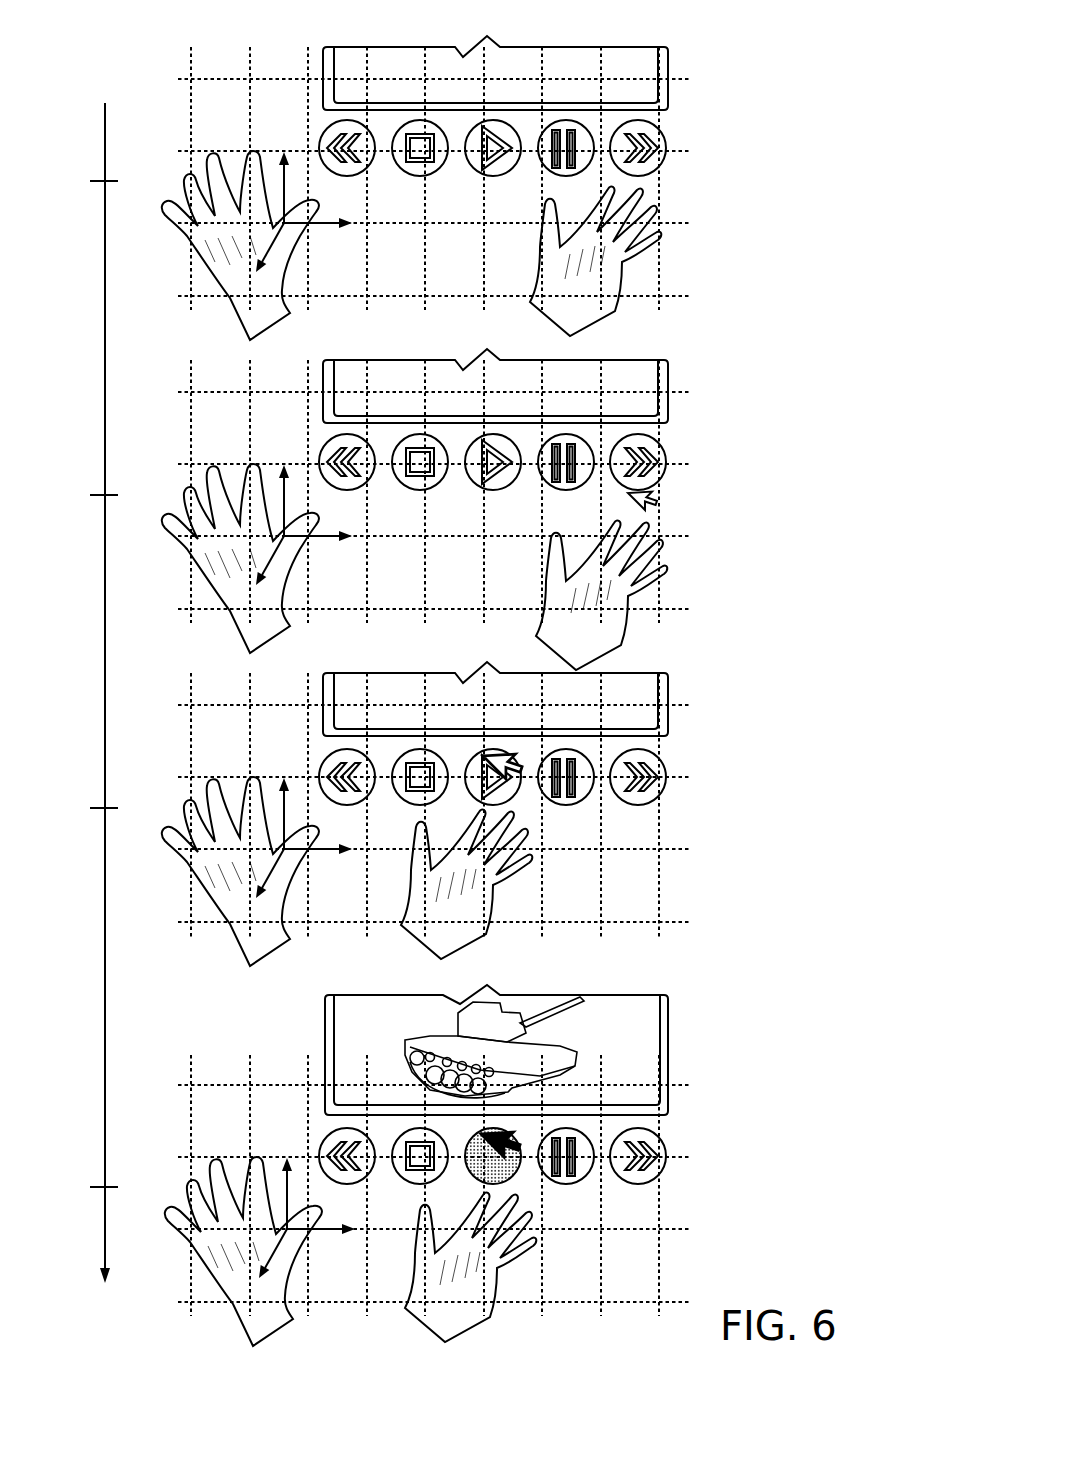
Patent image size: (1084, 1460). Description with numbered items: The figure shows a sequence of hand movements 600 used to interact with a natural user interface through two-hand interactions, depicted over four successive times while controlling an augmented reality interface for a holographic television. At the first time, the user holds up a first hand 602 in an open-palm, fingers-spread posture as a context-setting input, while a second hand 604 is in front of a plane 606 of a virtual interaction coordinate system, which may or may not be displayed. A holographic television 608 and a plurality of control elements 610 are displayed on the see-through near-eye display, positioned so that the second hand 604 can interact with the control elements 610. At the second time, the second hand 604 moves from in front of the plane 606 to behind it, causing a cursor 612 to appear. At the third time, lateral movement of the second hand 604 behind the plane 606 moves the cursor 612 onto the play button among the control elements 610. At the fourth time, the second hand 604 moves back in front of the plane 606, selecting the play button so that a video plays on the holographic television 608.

The hand movements 600 is at (792, 55).
The first hand 602 is at (289, 300).
The second hand 604 is at (652, 213).
The plane 606 is at (678, 76).
The holographic television 608 is at (497, 576).
The plurality of control elements 610 is at (674, 124).
The cursor 612 is at (645, 497).